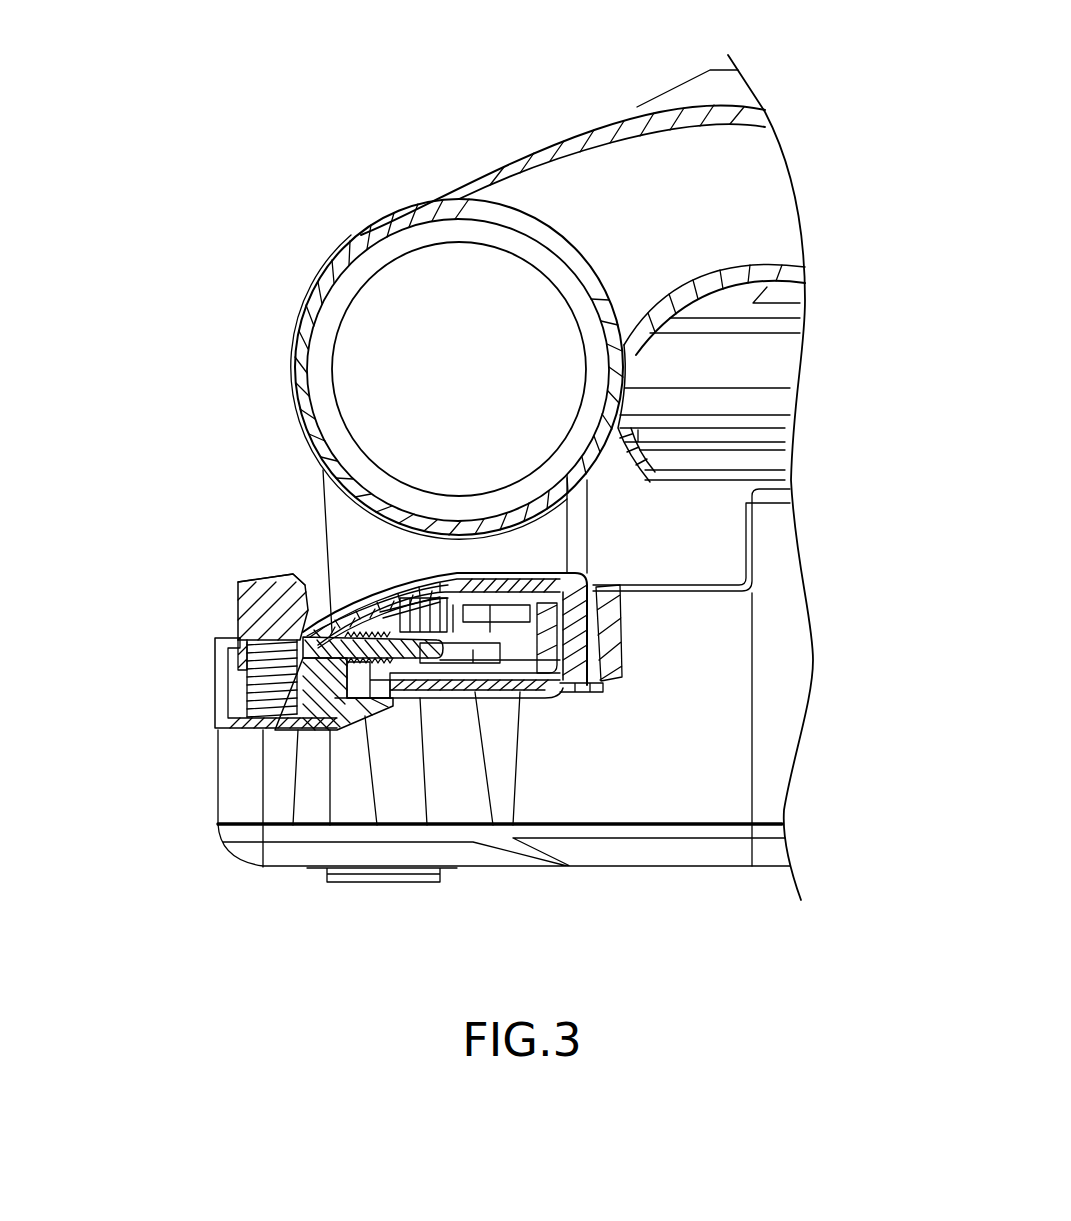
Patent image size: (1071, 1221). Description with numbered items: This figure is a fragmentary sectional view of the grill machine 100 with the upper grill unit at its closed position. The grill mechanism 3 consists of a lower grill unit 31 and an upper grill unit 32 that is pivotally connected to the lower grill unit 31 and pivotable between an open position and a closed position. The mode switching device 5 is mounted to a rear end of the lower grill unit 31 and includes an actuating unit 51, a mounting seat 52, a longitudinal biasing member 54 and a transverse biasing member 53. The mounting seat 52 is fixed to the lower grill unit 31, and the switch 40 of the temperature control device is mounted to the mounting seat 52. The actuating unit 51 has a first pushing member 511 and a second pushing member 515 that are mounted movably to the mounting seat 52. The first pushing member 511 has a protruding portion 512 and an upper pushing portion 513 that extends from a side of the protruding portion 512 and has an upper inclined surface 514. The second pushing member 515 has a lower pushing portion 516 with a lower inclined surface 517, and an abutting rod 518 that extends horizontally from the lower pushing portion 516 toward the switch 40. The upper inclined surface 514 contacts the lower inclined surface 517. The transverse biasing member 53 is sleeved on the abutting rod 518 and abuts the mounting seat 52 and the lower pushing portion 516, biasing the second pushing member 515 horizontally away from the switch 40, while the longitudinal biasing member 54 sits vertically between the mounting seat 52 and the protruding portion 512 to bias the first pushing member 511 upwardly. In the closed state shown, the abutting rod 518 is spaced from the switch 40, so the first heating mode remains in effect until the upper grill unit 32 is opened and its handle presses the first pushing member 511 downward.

The grill machine 100 is at (377, 142).
The grill mechanism 3 is at (600, 115).
The upper grill unit 32 is at (502, 155).
The lower grill unit 31 is at (700, 828).
The mode switching device 5 is at (213, 699).
The actuating unit 51 is at (258, 580).
The first pushing member 511 is at (237, 593).
The protruding portion 512 is at (240, 612).
The upper pushing portion 513 is at (312, 642).
The upper inclined surface 514 is at (333, 630).
The second pushing member 515 is at (328, 880).
The lower pushing portion 516 is at (300, 735).
The lower inclined surface 517 is at (312, 676).
The abutting rod 518 is at (428, 698).
The mounting seat 52 is at (227, 683).
The transverse biasing member 53 is at (400, 650).
The longitudinal biasing member 54 is at (295, 670).
The switch 40 is at (475, 660).